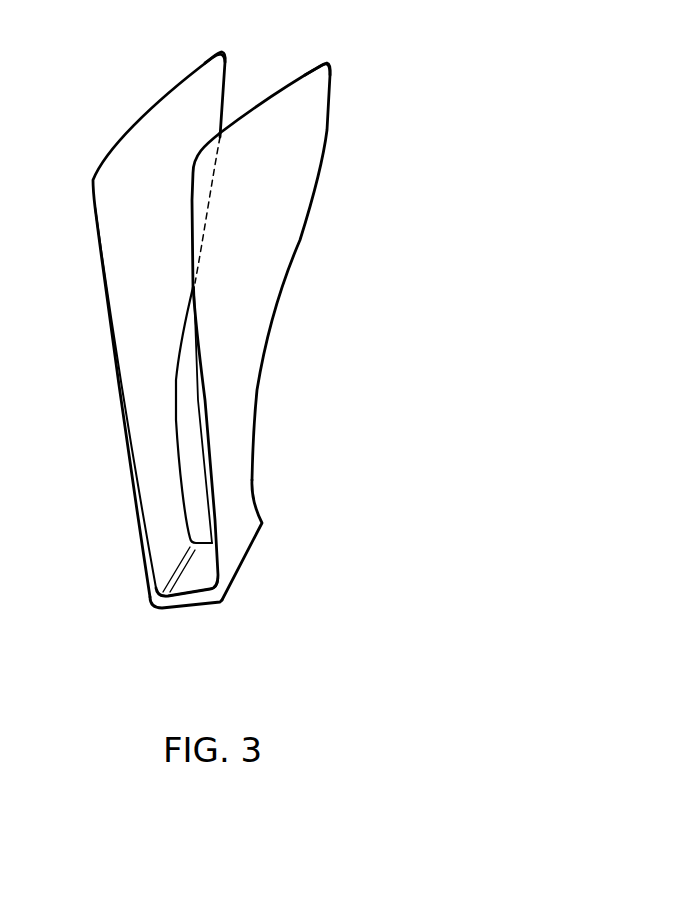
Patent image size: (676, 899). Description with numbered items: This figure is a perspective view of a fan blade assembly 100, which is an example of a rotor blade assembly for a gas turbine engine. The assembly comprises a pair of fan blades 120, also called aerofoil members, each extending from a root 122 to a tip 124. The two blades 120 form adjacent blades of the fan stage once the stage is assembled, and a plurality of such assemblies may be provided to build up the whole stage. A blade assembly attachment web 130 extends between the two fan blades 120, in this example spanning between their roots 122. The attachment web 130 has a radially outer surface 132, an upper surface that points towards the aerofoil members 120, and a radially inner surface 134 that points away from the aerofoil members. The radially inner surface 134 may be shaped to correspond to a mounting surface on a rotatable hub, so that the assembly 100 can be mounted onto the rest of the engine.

The fan blade assembly 100 is at (435, 62).
The fan blade 120 is at (130, 315).
The root 122 is at (243, 545).
The tip 124 is at (297, 88).
The blade assembly attachment web 130 is at (176, 603).
The radially outer surface 132 is at (197, 565).
The radially inner surface 134 is at (198, 605).